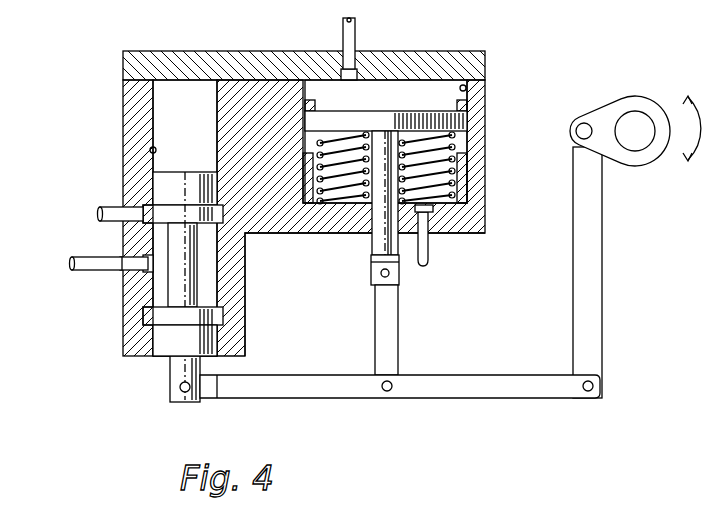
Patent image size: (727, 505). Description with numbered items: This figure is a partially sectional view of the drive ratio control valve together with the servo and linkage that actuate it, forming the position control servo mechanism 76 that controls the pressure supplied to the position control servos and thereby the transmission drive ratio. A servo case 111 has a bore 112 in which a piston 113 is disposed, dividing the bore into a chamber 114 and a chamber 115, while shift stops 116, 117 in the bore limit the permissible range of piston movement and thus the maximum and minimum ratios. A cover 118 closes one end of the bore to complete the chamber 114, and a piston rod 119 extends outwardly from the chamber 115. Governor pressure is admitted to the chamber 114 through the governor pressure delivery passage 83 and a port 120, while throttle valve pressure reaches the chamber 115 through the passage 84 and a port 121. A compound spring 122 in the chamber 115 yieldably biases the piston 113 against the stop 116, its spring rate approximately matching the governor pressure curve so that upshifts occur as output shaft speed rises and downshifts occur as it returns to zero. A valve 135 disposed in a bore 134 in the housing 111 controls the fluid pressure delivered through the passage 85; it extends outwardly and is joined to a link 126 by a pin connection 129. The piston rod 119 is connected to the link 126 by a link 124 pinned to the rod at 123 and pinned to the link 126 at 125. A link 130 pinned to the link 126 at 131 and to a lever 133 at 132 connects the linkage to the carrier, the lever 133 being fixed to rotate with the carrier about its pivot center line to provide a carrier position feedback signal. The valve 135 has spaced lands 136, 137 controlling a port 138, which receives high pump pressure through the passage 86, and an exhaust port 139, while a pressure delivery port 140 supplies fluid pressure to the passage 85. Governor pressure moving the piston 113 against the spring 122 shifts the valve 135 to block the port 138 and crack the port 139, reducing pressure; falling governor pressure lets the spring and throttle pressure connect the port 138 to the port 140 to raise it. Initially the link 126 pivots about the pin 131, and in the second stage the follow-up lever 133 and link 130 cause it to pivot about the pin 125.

The position control servo mechanism 76 is at (255, 60).
The governor pressure delivery passage 83 is at (345, 42).
The passage 84 is at (428, 248).
The passage 85 is at (92, 268).
The passage 86 is at (105, 214).
The servo case 111 is at (298, 236).
The bore 112 is at (467, 88).
The piston 113 is at (378, 127).
The chamber 114 is at (440, 85).
The chamber 115 is at (464, 130).
The shift stop 116 is at (467, 106).
The shift stop 117 is at (468, 170).
The cover 118 is at (215, 68).
The piston rod 119 is at (378, 242).
The port 120 is at (350, 76).
The port 121 is at (433, 210).
The compound spring 122 is at (333, 131).
The pin connection 123 is at (378, 276).
The link 124 is at (398, 325).
The pin 125 is at (385, 392).
The link 126 is at (490, 393).
The pin connection 129 is at (185, 393).
The link 130 is at (595, 218).
The pin 131 is at (588, 392).
The pin 132 is at (583, 123).
The lever 133 is at (648, 110).
The bore 134 is at (150, 150).
The valve 135 is at (192, 170).
The land 136 is at (160, 190).
The land 137 is at (175, 345).
The port 138 is at (143, 212).
The exhaust port 139 is at (147, 318).
The pressure delivery port 140 is at (146, 262).